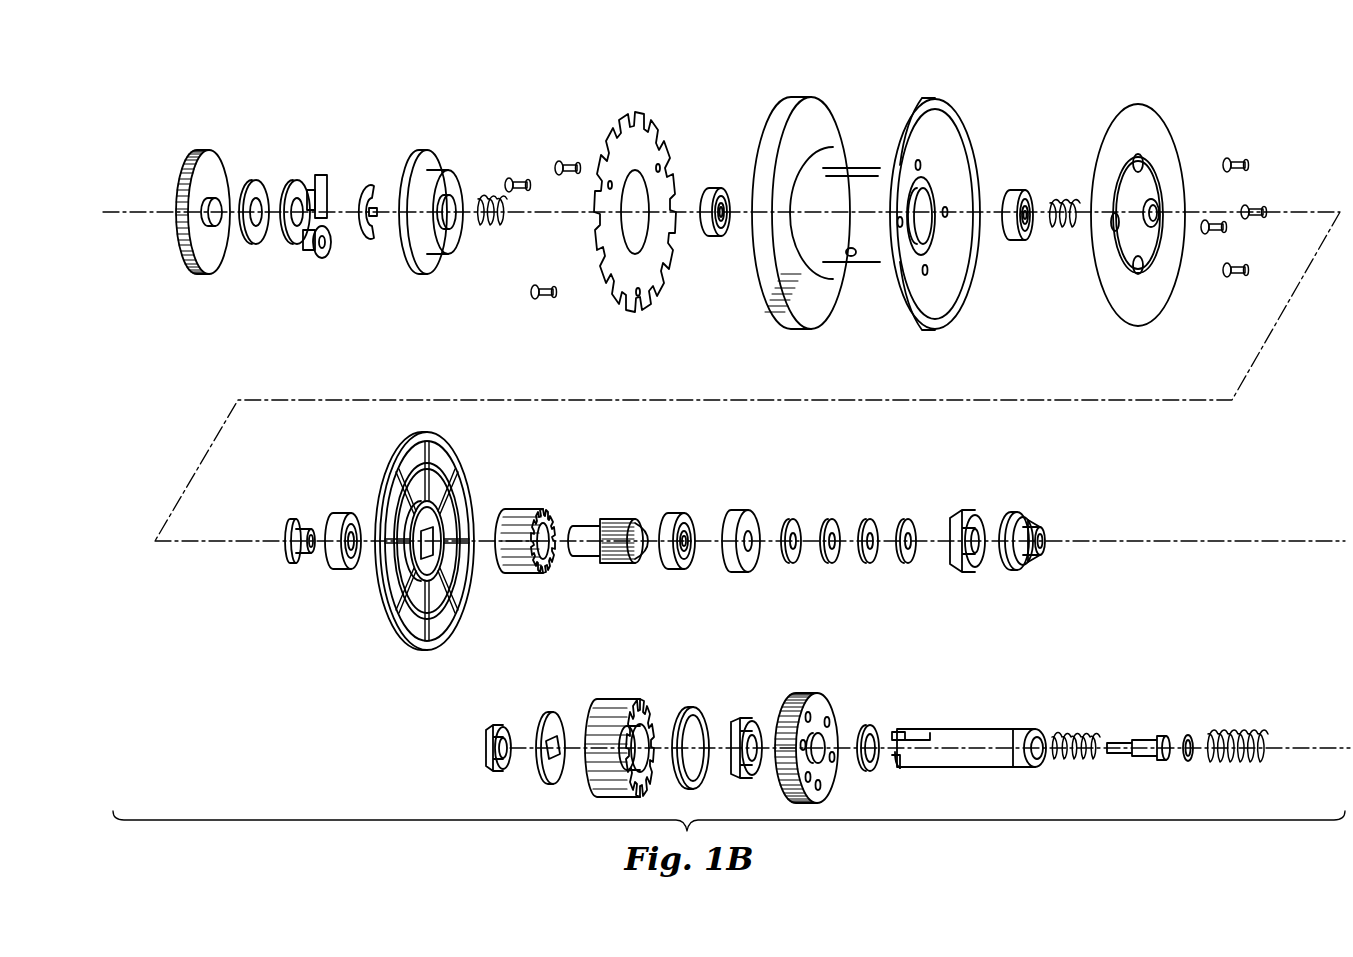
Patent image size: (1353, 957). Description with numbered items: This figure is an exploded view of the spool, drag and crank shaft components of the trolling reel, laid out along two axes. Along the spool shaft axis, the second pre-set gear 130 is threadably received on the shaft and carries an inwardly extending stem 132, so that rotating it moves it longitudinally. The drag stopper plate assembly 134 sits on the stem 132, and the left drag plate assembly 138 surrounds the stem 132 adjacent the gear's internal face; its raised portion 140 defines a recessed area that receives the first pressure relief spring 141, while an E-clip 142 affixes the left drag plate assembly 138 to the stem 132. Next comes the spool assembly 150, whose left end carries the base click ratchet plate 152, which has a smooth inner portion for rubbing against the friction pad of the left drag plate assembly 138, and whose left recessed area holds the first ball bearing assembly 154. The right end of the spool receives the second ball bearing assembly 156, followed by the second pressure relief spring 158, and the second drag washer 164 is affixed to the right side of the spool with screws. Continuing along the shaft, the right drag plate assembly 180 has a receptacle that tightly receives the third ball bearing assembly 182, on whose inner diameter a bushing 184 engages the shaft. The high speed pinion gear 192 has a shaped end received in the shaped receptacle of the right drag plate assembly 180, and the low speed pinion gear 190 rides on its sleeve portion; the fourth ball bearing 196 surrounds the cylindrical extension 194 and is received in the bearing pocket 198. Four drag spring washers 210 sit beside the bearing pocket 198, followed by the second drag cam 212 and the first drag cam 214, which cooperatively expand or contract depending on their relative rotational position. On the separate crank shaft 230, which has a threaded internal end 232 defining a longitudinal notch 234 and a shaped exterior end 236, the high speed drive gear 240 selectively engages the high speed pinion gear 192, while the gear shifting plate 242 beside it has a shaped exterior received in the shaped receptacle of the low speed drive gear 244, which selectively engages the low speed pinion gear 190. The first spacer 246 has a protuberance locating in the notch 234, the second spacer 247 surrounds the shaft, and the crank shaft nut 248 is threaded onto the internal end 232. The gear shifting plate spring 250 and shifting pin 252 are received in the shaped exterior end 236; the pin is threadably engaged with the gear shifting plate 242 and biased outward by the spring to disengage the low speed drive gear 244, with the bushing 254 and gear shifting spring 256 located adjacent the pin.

The second pre-set gear 130 is at (203, 158).
The stem 132 is at (218, 226).
The drag stopper plate assembly 134 is at (300, 232).
The left drag plate assembly 138 is at (418, 263).
The raised portion 140 is at (452, 180).
The first pressure relief spring 141 is at (485, 228).
The E-clip 142 is at (367, 182).
The spool assembly 150 is at (773, 300).
The base click ratchet plate 152 is at (627, 272).
The first ball bearing assembly 154 is at (712, 190).
The second ball bearing assembly 156 is at (1017, 190).
The second pressure relief spring 158 is at (1062, 205).
The second drag washer 164 is at (1140, 315).
The right drag plate assembly 180 is at (392, 598).
The third ball bearing assembly 182 is at (340, 515).
The bushing 184 is at (292, 517).
The low speed pinion gear 190 is at (523, 522).
The high speed pinion gear 192 is at (582, 522).
The cylindrical extension 194 is at (644, 534).
The fourth ball bearing 196 is at (678, 520).
The bearing pocket 198 is at (742, 520).
The drag spring washers 210 is at (910, 527).
The second drag cam 212 is at (965, 520).
The first drag cam 214 is at (1033, 520).
The crank shaft 230 is at (965, 740).
The threaded internal end 232 is at (893, 768).
The longitudinal notch 234 is at (907, 737).
The shaped exterior end 236 is at (1035, 732).
The high speed drive gear 240 is at (820, 707).
The gear shifting plate 242 is at (753, 720).
The low speed drive gear 244 is at (620, 718).
The first spacer 246 is at (552, 718).
The second spacer 247 is at (695, 710).
The crank shaft nut 248 is at (498, 722).
The gear shifting plate spring 250 is at (1080, 760).
The shifting pin 252 is at (1118, 746).
The bushing 254 is at (1190, 740).
The gear shifting spring 256 is at (1258, 740).